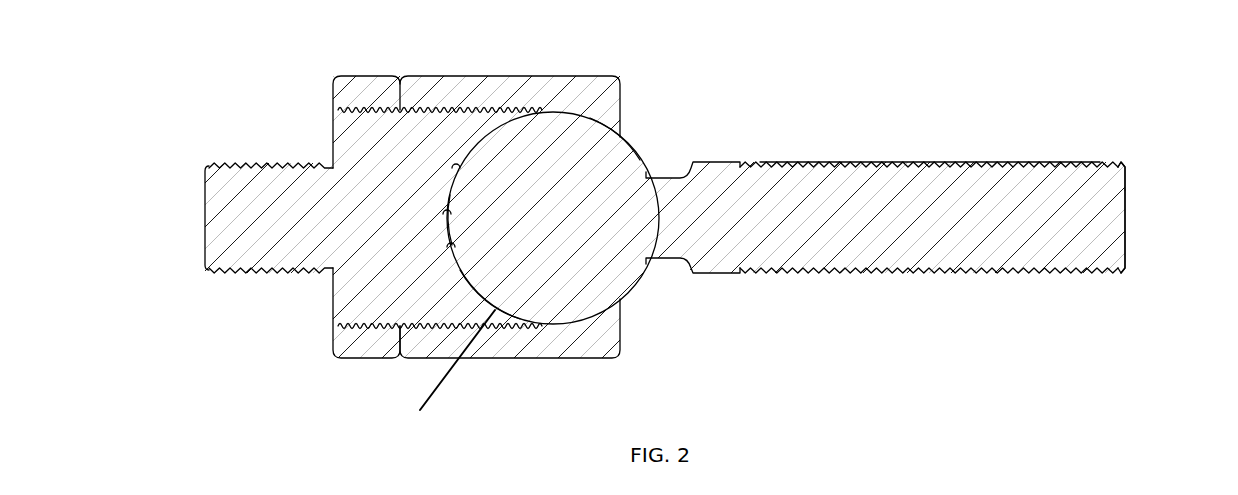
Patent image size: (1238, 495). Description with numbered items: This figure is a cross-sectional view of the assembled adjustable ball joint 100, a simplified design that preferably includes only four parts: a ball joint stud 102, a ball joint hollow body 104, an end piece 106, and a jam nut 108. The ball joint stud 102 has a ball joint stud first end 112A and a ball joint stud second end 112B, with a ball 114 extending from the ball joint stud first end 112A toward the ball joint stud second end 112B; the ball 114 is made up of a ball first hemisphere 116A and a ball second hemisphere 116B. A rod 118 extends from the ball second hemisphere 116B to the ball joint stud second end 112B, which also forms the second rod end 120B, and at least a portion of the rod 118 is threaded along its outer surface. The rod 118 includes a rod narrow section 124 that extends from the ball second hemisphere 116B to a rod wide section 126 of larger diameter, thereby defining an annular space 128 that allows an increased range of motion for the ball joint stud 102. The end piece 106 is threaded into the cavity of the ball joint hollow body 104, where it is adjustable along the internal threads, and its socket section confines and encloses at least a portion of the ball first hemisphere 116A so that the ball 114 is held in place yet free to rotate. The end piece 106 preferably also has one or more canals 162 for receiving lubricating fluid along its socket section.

The adjustable ball joint 100 is at (663, 75).
The ball joint stud 102 is at (767, 182).
The ball joint hollow body 104 is at (497, 84).
The end piece 106 is at (252, 200).
The jam nut 108 is at (348, 93).
The ball joint stud first end 112A is at (452, 233).
The ball joint stud second end 112B is at (1122, 215).
The ball 114 is at (560, 228).
The ball first hemisphere 116A is at (497, 227).
The ball second hemisphere 116B is at (608, 165).
The rod 118 is at (877, 183).
The second rod end 120B is at (1123, 190).
The rod narrow section 124 is at (665, 196).
The rod wide section 126 is at (735, 262).
The annular space 128 is at (663, 268).
The canals 162 is at (485, 302).